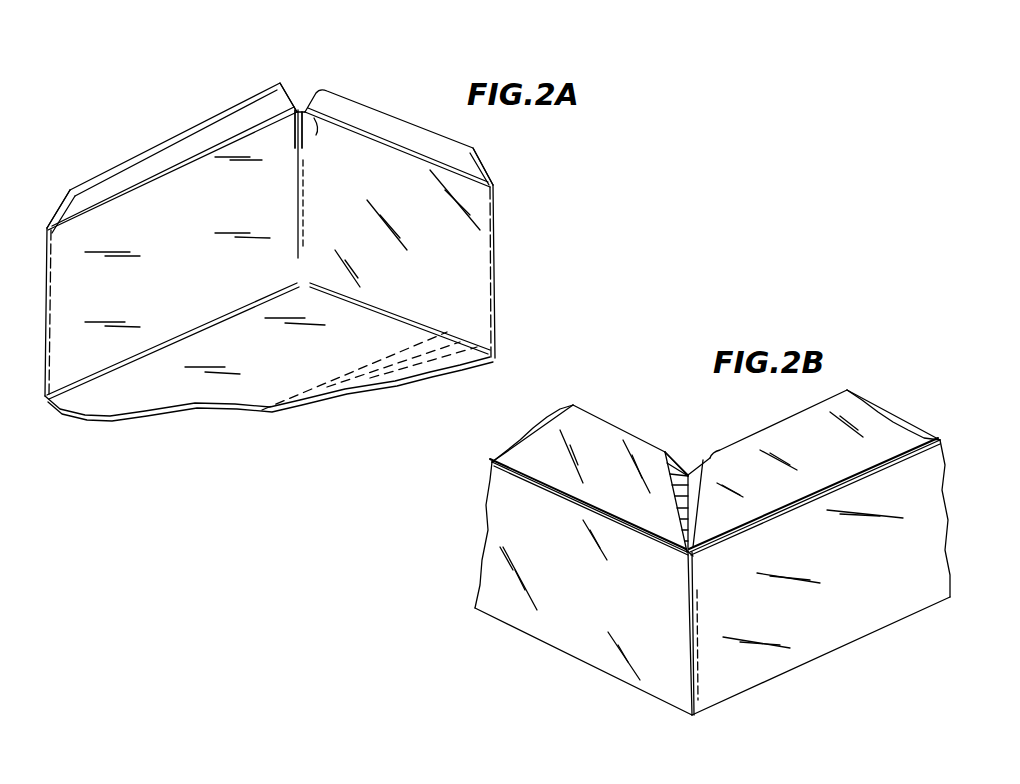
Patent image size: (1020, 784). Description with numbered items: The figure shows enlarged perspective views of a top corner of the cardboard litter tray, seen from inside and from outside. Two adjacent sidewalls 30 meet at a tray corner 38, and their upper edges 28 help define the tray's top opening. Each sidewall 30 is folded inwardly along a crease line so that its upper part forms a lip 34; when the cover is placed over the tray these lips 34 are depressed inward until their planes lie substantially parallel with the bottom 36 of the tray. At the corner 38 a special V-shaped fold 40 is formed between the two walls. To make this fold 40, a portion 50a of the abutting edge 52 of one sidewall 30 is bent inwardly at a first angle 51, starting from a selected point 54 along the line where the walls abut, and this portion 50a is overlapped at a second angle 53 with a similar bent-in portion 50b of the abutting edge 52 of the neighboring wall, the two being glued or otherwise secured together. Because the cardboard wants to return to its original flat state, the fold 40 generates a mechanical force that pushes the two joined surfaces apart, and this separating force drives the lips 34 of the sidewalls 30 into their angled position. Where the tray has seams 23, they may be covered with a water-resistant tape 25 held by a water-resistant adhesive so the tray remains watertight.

In FIG. 2A, the seams 23 is at (387, 362).
In FIG. 2A, the water-resistant tape 25 is at (421, 353).
In FIG. 2A, the upper edges 28 is at (223, 112).
In FIG. 2B, the upper edges 28 is at (638, 433).
In FIG. 2A, the sidewalls 30 is at (482, 253).
In FIG. 2B, the sidewalls 30 is at (515, 608).
In FIG. 2A, the lips 34 is at (50, 227).
In FIG. 2B, the lips 34 is at (545, 440).
In FIG. 2A, the bottom 36 is at (170, 390).
In FIG. 2A, the tray corner 38 is at (300, 223).
In FIG. 2B, the tray corner 38 is at (687, 617).
In FIG. 2A, the V-shaped fold 40 is at (323, 93).
In FIG. 2B, the V-shaped fold 40 is at (688, 465).
In FIG. 2A, the bent-in portion 50a is at (305, 145).
In FIG. 2A, the bent-in portion 50b is at (293, 138).
In FIG. 2A, the first angle 51 is at (283, 85).
In FIG. 2B, the abutting edge 52 is at (683, 530).
In FIG. 2A, the second angle 53 is at (316, 122).
In FIG. 2B, the selected point 54 is at (698, 558).